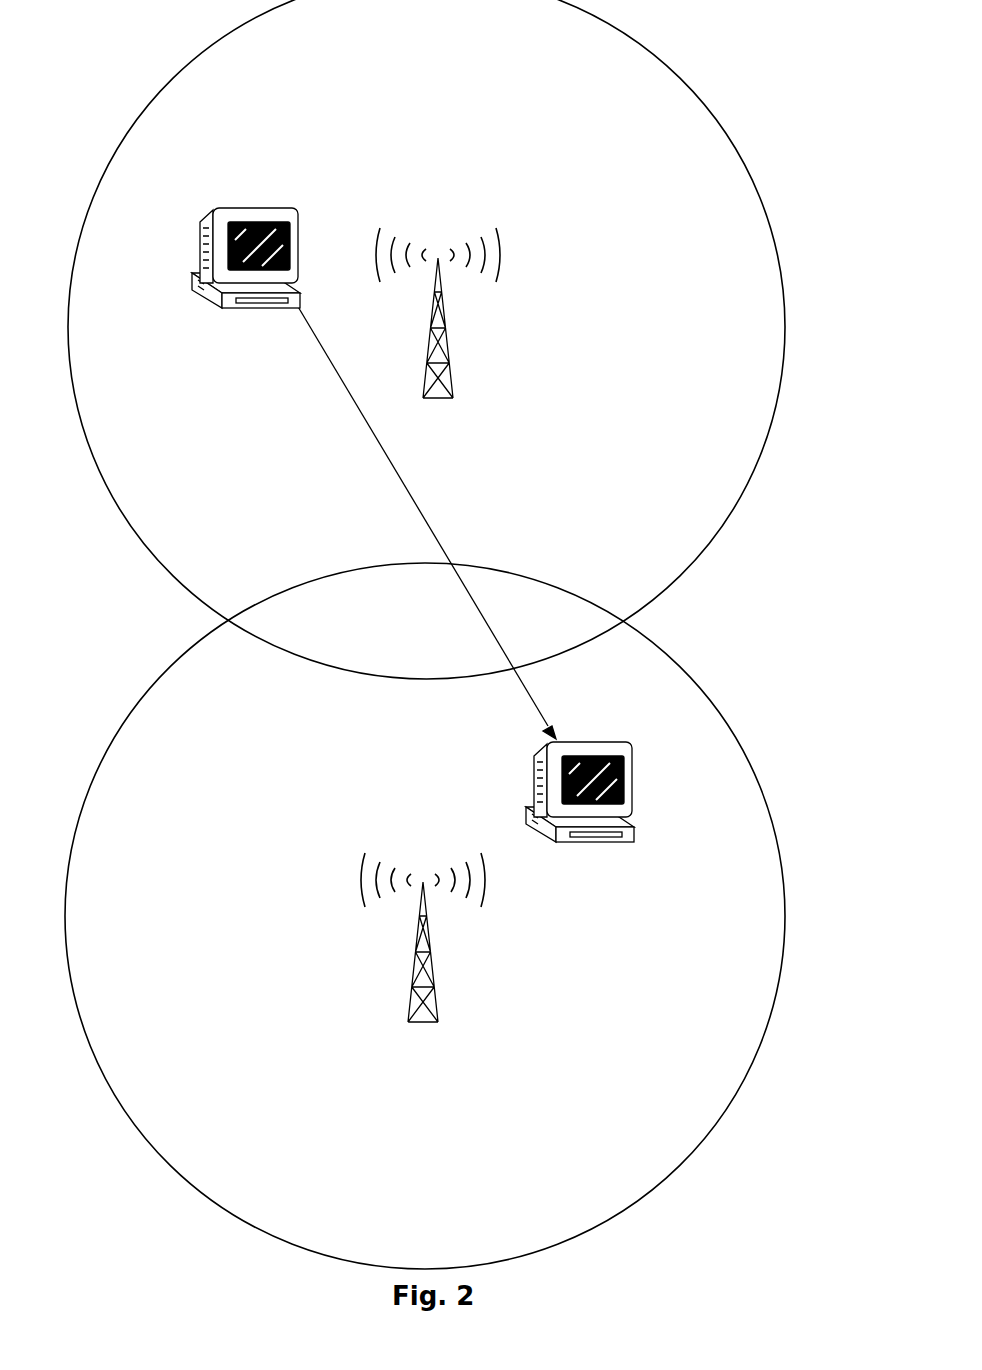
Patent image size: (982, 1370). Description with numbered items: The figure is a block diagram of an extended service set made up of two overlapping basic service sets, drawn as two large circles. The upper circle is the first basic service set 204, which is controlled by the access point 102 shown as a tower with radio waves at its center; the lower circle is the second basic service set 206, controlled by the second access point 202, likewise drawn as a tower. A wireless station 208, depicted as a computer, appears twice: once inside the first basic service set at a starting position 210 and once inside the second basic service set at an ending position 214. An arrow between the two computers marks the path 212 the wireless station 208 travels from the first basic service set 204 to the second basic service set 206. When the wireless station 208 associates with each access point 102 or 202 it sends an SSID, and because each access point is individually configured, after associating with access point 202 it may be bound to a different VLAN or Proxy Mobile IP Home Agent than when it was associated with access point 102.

The access point 102 is at (460, 313).
The access point 202 is at (416, 939).
The basic service set 204 is at (456, 339).
The basic service set 206 is at (448, 916).
The wireless station 208 is at (397, 536).
The first location of mobile device 210 is at (246, 274).
The path 212 is at (426, 522).
The second location of mobile device 214 is at (568, 780).